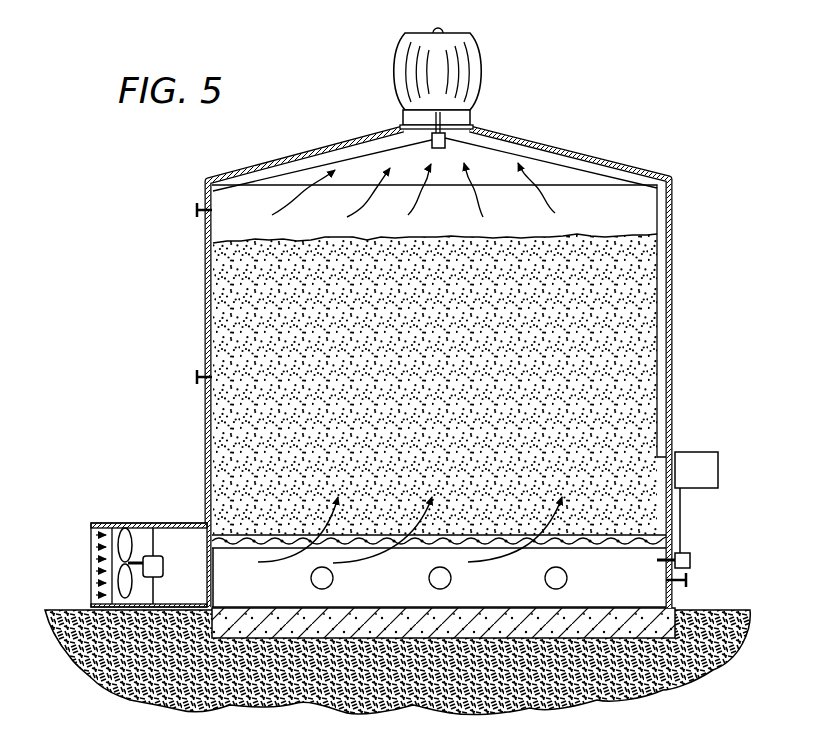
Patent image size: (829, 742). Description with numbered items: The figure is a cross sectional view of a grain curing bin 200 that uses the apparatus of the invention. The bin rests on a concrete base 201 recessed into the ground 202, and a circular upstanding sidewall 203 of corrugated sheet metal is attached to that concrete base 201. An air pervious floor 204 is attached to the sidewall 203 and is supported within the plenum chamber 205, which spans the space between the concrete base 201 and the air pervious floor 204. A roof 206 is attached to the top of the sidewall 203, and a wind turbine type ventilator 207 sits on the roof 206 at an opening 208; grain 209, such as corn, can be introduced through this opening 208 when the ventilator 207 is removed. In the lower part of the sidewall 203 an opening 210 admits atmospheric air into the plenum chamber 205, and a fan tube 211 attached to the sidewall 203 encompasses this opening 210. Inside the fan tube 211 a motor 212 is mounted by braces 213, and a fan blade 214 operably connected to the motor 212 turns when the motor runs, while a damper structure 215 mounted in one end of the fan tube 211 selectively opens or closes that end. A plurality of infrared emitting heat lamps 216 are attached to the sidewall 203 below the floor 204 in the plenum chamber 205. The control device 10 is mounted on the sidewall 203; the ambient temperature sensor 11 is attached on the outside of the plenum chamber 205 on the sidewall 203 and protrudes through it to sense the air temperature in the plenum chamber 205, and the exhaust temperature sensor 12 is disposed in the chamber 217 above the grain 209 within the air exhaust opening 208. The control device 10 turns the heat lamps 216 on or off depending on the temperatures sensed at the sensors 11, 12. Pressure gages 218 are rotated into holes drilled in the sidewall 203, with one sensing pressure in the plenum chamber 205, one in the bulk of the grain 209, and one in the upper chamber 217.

The grain curing bin 200 is at (475, 353).
The concrete base 201 is at (530, 610).
The ground 202 is at (70, 610).
The sidewall 203 is at (675, 296).
The air pervious floor 204 is at (448, 548).
The plenum chamber 205 is at (631, 584).
The roof 206 is at (538, 141).
The wind turbine type ventilator 207 is at (468, 68).
The opening 208 is at (460, 120).
The grain 209 is at (543, 257).
The opening 210 is at (213, 556).
The fan tube 211 is at (140, 527).
The motor 212 is at (158, 568).
The braces 213 is at (158, 540).
The fan blade 214 is at (122, 532).
The damper structure 215 is at (100, 573).
The infrared emitting heat lamps 216 is at (430, 575).
The chamber 217 is at (630, 215).
The pressure gage 218 is at (198, 208).
The control device 10 is at (717, 453).
The ambient temperature sensor 11 is at (686, 560).
The exhaust temperature sensor 12 is at (432, 140).